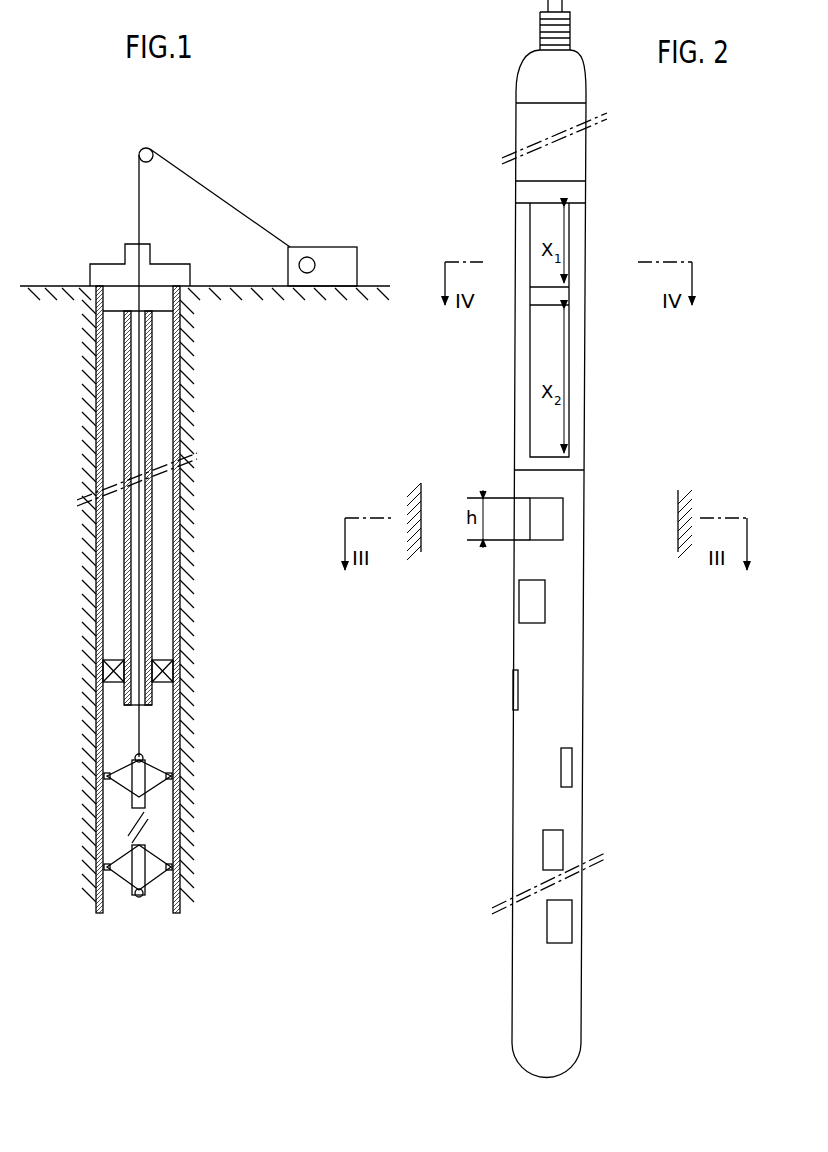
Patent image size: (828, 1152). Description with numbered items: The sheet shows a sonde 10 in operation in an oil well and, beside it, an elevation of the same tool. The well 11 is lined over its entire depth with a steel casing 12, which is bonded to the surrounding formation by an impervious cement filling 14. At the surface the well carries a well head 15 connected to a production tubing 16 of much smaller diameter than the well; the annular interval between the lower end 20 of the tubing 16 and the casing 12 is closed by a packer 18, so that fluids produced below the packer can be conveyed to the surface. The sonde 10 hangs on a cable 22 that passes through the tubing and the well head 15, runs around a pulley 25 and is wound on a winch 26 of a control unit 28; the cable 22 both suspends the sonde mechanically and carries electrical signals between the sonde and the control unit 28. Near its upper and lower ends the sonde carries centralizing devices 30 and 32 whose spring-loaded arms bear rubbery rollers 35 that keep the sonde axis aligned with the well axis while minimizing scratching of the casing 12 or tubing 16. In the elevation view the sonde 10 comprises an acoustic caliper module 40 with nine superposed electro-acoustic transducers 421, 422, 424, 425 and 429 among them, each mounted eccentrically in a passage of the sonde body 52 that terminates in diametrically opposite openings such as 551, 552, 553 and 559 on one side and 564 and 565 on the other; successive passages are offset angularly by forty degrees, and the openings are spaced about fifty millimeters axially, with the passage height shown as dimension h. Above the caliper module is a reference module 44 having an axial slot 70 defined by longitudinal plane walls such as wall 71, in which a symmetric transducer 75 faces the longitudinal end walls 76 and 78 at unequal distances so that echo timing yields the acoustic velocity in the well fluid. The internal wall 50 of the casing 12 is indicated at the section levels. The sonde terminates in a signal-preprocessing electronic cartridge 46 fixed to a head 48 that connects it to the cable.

In FIG. 1, the sonde 10 is at (145, 838).
In FIG. 2, the sonde 10 is at (641, 182).
In FIG. 1, the well 11 is at (160, 722).
In FIG. 1, the steel casing 12 is at (178, 748).
In FIG. 1, the cement filling 14 is at (178, 495).
In FIG. 1, the well head 15 is at (97, 272).
In FIG. 1, the production tubing 16 is at (152, 400).
In FIG. 1, the packer 18 is at (168, 670).
In FIG. 1, the lower end of the tubing 20 is at (105, 715).
In FIG. 1, the cable 22 is at (130, 462).
In FIG. 1, the pulley 25 is at (139, 153).
In FIG. 1, the winch 26 is at (307, 262).
In FIG. 1, the control unit 28 is at (347, 257).
In FIG. 1, the upper centralizing device 30 is at (106, 768).
In FIG. 1, the lower centralizing device 32 is at (158, 858).
In FIG. 1, the rollers 35 is at (172, 777).
In FIG. 2, the acoustic caliper module 40 is at (462, 858).
In FIG. 2, the reference module 44 is at (510, 385).
In FIG. 2, the signal-preprocessing electronic cartridge 46 is at (529, 117).
In FIG. 2, the head 48 is at (518, 78).
In FIG. 2, the internal wall of the casing 50 is at (421, 535).
In FIG. 2, the sonde body 52 is at (525, 568).
In FIG. 2, the axial slot 70 is at (570, 248).
In FIG. 2, the longitudinal plane wall 71 is at (570, 400).
In FIG. 2, the symmetric transducer 75 is at (545, 296).
In FIG. 2, the longitudinal end wall 76 is at (535, 448).
In FIG. 2, the longitudinal end wall 78 is at (537, 213).
In FIG. 2, the electro-acoustic transducer 421 is at (560, 507).
In FIG. 2, the electro-acoustic transducer 422 is at (534, 610).
In FIG. 2, the electro-acoustic transducer 424 is at (566, 760).
In FIG. 2, the electro-acoustic transducer 425 is at (555, 845).
In FIG. 2, the electro-acoustic transducer 429 is at (562, 912).
In FIG. 2, the opening 551 is at (558, 542).
In FIG. 2, the opening 552 is at (533, 625).
In FIG. 2, the opening 553 is at (515, 712).
In FIG. 2, the opening 559 is at (572, 940).
In FIG. 2, the opening 564 is at (575, 782).
In FIG. 2, the opening 565 is at (565, 866).